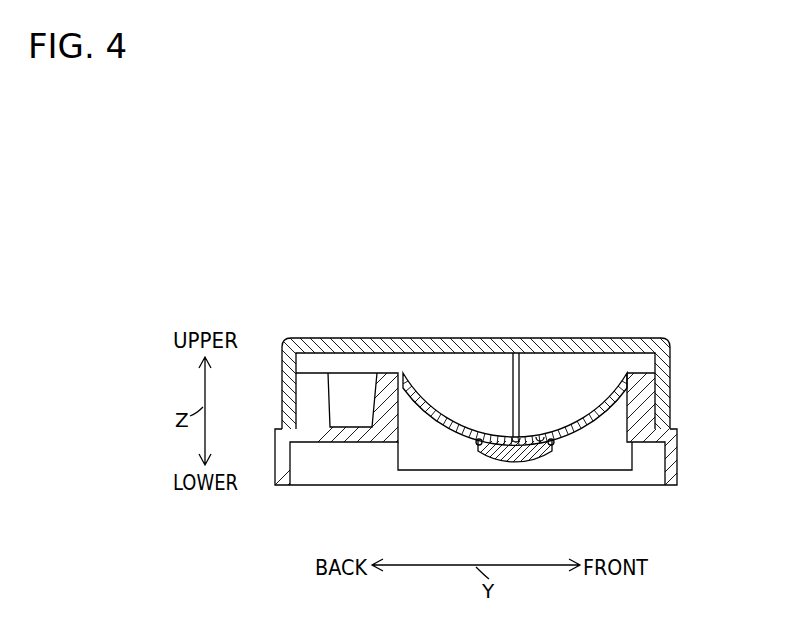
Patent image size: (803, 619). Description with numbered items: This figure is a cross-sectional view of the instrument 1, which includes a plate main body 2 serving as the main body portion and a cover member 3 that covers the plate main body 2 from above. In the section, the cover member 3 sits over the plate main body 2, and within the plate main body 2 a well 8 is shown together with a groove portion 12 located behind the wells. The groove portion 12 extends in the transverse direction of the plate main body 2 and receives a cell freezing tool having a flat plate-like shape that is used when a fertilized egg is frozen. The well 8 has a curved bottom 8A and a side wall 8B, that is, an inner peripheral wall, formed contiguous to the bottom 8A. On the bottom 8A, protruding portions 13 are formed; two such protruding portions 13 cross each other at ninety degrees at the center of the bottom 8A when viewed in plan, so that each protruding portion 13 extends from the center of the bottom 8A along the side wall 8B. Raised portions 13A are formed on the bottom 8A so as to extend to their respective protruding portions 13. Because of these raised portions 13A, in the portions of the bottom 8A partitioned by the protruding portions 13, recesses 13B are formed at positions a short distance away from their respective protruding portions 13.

The instrument 1 is at (532, 262).
The plate main body 2 is at (677, 457).
The cover member 3 is at (670, 366).
The well 8 is at (583, 393).
The bottom 8A is at (478, 447).
The side wall 8B is at (403, 397).
The groove portion 12 is at (332, 400).
The protruding portion 13 is at (512, 392).
The raised portion 13A is at (522, 440).
The recess 13B is at (538, 447).